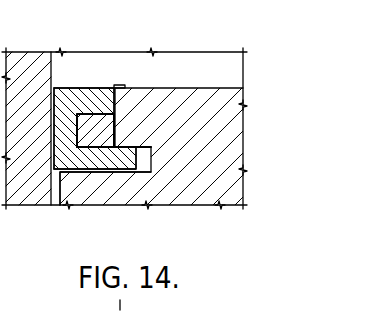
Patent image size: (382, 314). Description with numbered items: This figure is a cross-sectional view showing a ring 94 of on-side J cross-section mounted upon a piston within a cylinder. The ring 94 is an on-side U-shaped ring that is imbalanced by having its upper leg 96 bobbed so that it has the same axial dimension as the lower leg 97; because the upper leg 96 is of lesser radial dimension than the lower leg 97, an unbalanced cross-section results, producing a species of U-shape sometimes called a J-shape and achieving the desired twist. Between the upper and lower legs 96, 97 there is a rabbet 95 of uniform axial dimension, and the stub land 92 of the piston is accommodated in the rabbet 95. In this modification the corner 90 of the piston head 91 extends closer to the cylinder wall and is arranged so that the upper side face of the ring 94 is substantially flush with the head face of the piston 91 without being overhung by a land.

The corner 90 is at (121, 86).
The piston head 91 is at (185, 88).
The stub land 92 is at (95, 130).
The ring 94 is at (65, 128).
The rabbet 95 is at (78, 172).
The upper leg 96 is at (86, 88).
The lower leg 97 is at (123, 170).